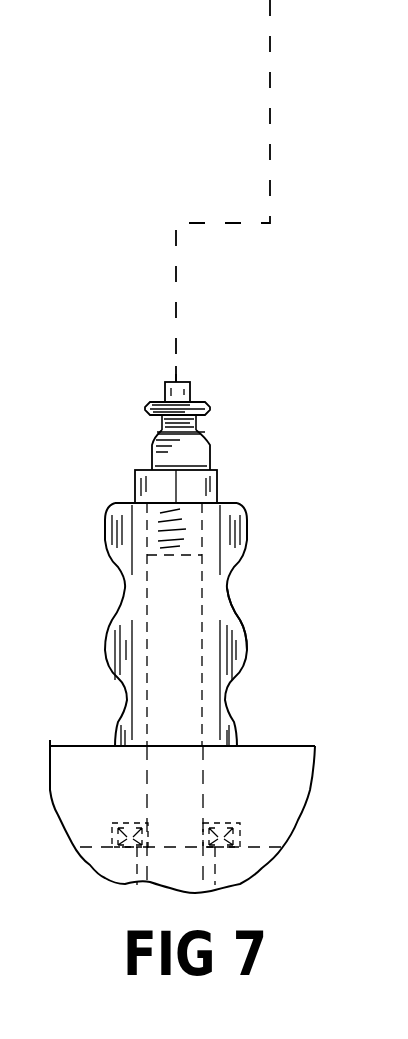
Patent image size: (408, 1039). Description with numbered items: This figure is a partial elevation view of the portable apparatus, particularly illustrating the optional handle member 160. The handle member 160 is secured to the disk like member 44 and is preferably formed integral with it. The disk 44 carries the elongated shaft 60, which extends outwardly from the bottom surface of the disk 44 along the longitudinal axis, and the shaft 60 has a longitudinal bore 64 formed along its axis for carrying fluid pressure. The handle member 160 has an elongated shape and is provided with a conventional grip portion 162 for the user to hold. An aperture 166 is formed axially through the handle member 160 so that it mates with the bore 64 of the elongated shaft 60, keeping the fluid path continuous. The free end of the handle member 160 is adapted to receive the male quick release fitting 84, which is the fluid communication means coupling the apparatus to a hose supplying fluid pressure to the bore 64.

The disk like member 44 is at (97, 745).
The elongated shaft 60 is at (143, 867).
The longitudinal bore 64 is at (210, 873).
The male quick release fitting 84 is at (203, 438).
The handle member 160 is at (230, 510).
The grip portion 162 is at (227, 613).
The aperture 166 is at (203, 658).